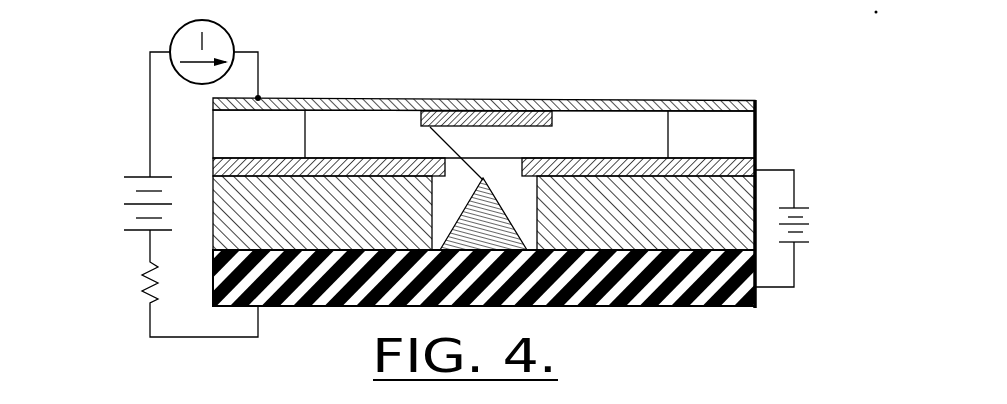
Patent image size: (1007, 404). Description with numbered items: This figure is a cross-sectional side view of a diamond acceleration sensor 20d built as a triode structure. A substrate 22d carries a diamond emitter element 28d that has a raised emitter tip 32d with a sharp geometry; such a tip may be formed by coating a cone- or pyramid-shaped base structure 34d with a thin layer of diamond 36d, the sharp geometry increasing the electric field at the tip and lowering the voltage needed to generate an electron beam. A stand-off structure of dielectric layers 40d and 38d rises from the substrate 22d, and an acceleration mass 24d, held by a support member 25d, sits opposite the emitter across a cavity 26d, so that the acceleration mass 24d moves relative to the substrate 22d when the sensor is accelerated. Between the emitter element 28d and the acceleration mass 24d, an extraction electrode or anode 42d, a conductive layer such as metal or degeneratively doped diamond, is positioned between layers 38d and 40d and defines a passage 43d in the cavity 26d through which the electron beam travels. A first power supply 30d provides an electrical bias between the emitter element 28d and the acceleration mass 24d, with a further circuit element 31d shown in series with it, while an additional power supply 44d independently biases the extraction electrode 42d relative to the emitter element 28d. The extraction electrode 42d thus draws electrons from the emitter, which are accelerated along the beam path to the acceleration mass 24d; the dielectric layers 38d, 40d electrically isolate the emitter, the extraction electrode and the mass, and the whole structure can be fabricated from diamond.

The diamond acceleration sensor 20d is at (424, 70).
The substrate 22d is at (740, 300).
The acceleration mass 24d is at (552, 122).
The support member 25d is at (484, 84).
The cavity 26d is at (362, 125).
The diamond emitter element 28d is at (487, 178).
The first power supply 30d is at (127, 193).
The ammeter 31d is at (176, 31).
The raised emitter tip 32d is at (490, 160).
The base structure 34d is at (505, 245).
The thin layer of diamond 36d is at (412, 100).
The dielectric stand-off layer 38d is at (735, 142).
The dielectric stand-off layer 40d is at (740, 205).
The extraction electrode 42d is at (762, 160).
The passage 43d is at (473, 158).
The additional power supply 44d is at (809, 237).